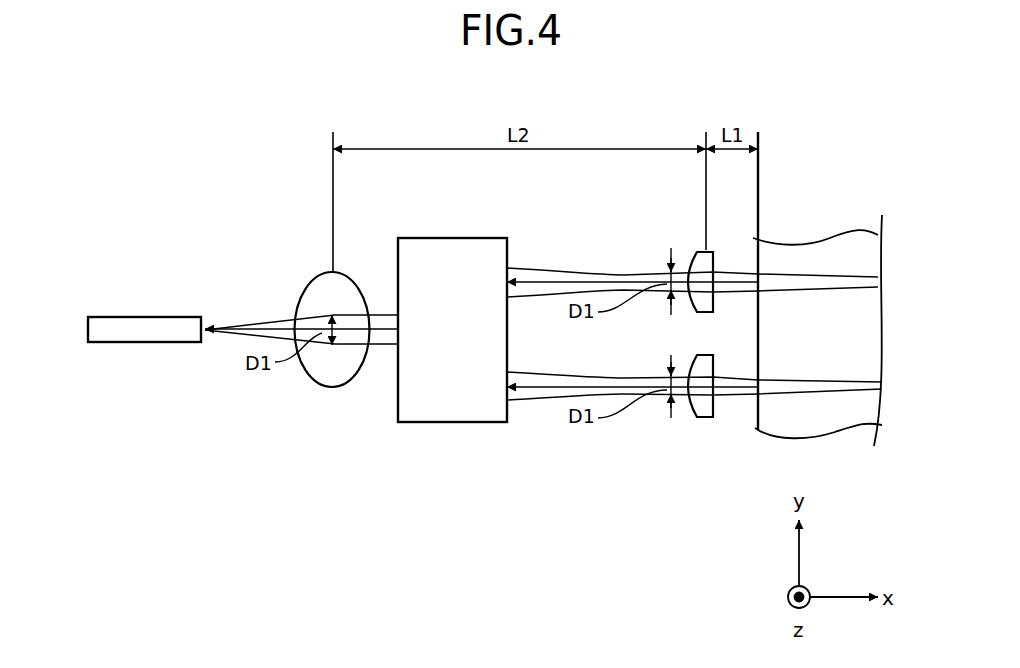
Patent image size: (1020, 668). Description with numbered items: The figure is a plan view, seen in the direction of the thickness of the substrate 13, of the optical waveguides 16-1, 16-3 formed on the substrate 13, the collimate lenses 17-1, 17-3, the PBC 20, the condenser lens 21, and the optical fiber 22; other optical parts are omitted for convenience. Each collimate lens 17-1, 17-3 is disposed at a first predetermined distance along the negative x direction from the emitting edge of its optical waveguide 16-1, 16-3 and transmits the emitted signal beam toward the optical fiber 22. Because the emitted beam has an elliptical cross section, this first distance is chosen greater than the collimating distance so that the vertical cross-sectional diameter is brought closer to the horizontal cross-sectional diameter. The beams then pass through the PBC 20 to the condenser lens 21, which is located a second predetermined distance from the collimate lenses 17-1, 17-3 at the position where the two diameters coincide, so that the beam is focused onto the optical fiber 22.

The substrate 13 is at (765, 266).
The optical waveguide 16-1 is at (823, 283).
The optical waveguide 16-3 is at (780, 388).
The collimate lens 17-1 is at (693, 258).
The collimate lens 17-3 is at (693, 362).
The PBC 20 is at (448, 238).
The condenser lens 21 is at (347, 272).
The optical fiber 22 is at (147, 317).